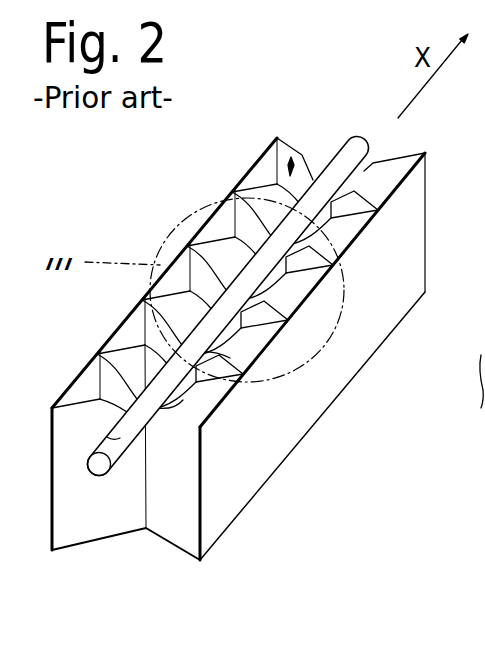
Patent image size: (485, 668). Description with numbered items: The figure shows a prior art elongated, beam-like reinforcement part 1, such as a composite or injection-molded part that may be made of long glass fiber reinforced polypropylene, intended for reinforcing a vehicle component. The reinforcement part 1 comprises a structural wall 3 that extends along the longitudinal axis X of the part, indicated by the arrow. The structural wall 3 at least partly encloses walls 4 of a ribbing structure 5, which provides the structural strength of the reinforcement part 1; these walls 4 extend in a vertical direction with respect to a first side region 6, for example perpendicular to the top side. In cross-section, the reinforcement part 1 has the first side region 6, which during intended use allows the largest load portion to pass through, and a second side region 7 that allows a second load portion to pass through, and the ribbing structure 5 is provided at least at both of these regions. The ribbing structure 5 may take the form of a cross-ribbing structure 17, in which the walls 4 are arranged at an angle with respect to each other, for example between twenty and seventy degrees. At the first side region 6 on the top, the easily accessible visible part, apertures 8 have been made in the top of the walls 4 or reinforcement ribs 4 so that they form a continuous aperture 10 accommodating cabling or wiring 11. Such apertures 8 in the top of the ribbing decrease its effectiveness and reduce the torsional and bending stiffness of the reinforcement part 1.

The reinforcement part 1 is at (217, 191).
The structural wall 3 is at (400, 216).
The walls 4 is at (168, 227).
The ribbing structure 5 is at (272, 200).
The cross-ribbing structure 17 is at (214, 250).
The first side region 6 is at (290, 178).
The second side region 7 is at (387, 273).
The apertures 8 is at (313, 180).
The continuous aperture 10 is at (472, 441).
The cabling or wiring 11 is at (118, 440).